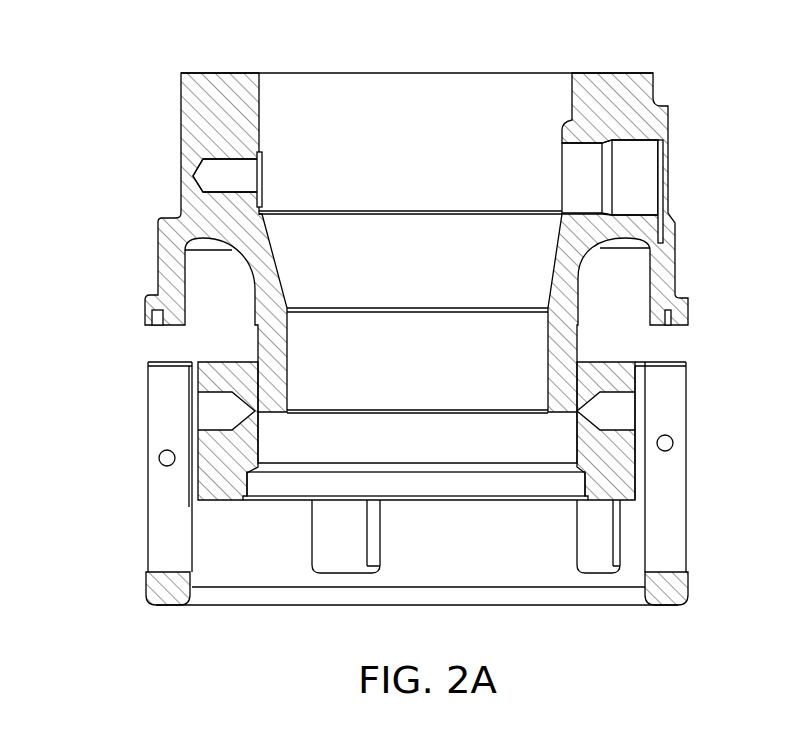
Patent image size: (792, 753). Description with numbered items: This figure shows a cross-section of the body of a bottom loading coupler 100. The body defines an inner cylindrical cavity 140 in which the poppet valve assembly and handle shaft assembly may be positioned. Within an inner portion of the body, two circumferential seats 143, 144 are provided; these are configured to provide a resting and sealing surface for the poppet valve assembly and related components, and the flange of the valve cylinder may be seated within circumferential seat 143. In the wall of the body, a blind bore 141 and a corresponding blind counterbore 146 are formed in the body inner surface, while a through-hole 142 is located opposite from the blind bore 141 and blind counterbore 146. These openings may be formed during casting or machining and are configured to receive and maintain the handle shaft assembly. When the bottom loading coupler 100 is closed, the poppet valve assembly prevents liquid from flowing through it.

The bottom loading coupler 100 is at (389, 319).
The inner cylindrical cavity 140 is at (438, 223).
The blind bore 141 is at (230, 179).
The through-hole 142 is at (637, 174).
The circumferential seat 143 is at (585, 487).
The circumferential seat 144 is at (560, 423).
The blind counterbore 146 is at (259, 160).